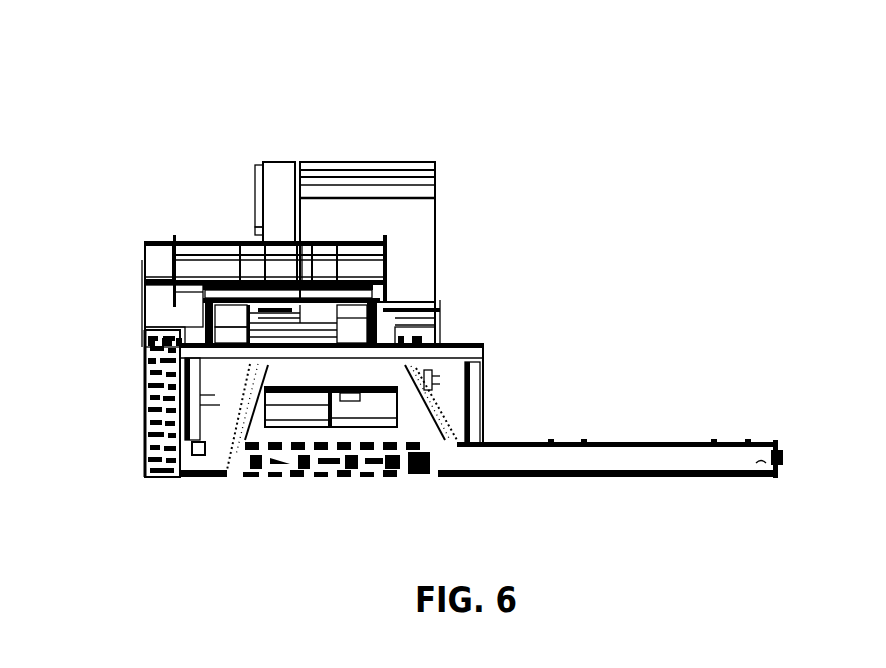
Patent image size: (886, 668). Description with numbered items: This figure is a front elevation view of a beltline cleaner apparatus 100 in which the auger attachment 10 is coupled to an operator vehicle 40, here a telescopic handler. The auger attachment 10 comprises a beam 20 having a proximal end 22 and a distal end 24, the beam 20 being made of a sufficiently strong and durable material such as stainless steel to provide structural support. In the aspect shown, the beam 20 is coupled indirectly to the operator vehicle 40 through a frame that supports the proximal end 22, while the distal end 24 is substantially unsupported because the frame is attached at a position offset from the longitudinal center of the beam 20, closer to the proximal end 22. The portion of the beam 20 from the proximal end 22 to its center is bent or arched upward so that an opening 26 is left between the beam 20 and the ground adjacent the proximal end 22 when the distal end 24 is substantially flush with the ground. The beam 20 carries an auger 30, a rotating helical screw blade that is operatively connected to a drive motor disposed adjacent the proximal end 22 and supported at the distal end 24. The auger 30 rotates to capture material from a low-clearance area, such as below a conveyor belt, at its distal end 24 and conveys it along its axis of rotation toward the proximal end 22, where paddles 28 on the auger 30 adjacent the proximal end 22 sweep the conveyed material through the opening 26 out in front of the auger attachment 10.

The beltline cleaner apparatus 100 is at (93, 152).
The auger attachment 10 is at (173, 547).
The operator vehicle 40 is at (470, 169).
The proximal end 22 is at (187, 463).
The opening 26 is at (298, 467).
The paddles 28 is at (333, 467).
The auger 30 is at (370, 467).
The beam 20 is at (520, 453).
The distal end 24 is at (757, 462).